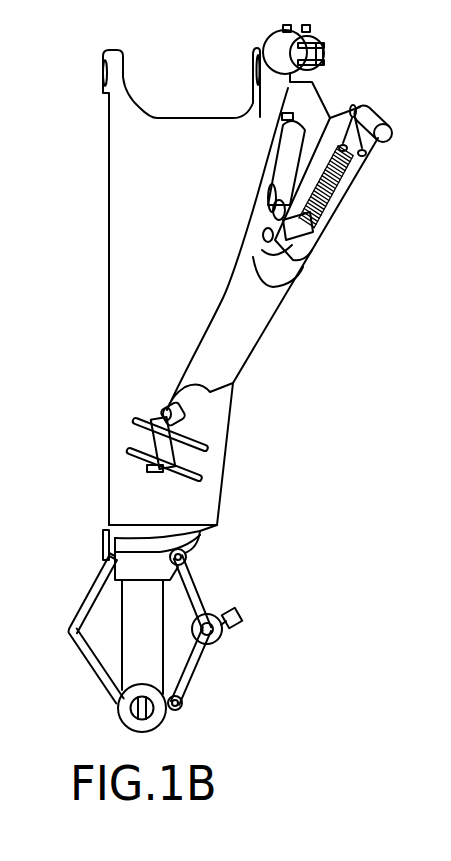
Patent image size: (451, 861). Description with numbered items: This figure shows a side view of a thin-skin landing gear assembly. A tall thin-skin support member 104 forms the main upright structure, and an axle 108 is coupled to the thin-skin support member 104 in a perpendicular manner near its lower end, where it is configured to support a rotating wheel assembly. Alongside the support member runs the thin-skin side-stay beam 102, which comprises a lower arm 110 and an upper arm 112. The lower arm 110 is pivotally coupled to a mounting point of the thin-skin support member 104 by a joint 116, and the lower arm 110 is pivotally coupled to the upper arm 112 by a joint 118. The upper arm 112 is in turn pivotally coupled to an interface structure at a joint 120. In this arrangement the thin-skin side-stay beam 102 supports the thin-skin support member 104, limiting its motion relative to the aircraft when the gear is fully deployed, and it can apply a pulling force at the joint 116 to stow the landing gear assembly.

The thin-skin side-stay beam 102 is at (327, 262).
The thin-skin support member 104 is at (122, 225).
The axle 108 is at (153, 717).
The lower arm 110 is at (215, 365).
The upper arm 112 is at (353, 178).
The joint 116 is at (166, 410).
The joint 118 is at (268, 232).
The joint 120 is at (355, 108).